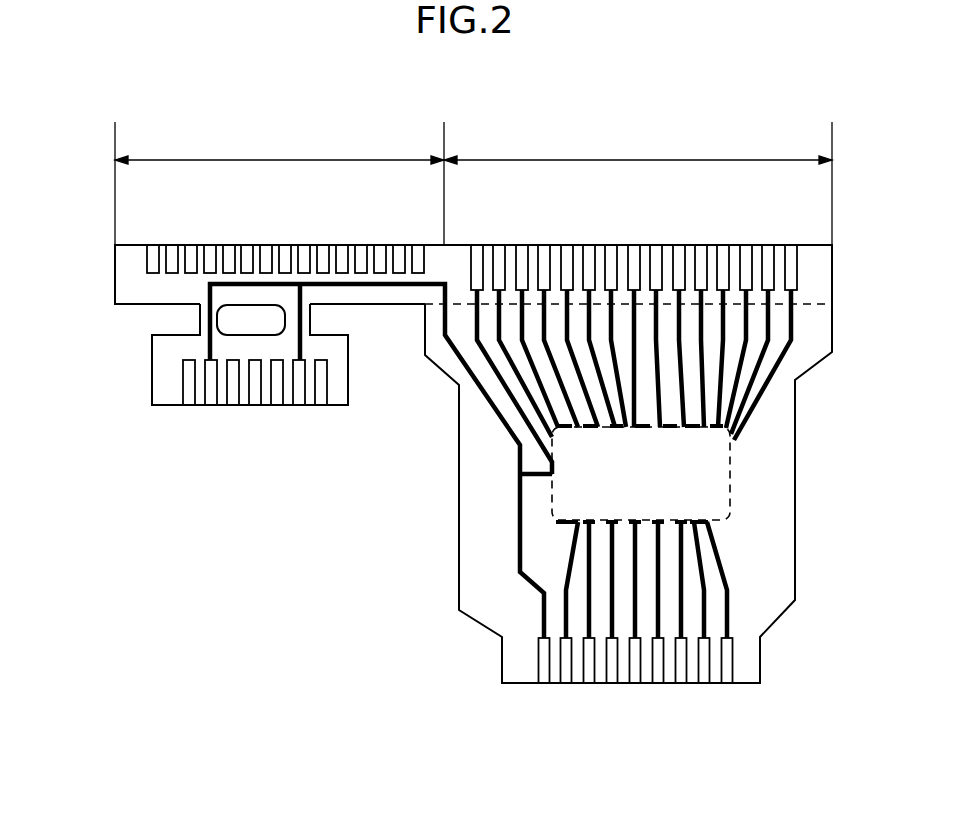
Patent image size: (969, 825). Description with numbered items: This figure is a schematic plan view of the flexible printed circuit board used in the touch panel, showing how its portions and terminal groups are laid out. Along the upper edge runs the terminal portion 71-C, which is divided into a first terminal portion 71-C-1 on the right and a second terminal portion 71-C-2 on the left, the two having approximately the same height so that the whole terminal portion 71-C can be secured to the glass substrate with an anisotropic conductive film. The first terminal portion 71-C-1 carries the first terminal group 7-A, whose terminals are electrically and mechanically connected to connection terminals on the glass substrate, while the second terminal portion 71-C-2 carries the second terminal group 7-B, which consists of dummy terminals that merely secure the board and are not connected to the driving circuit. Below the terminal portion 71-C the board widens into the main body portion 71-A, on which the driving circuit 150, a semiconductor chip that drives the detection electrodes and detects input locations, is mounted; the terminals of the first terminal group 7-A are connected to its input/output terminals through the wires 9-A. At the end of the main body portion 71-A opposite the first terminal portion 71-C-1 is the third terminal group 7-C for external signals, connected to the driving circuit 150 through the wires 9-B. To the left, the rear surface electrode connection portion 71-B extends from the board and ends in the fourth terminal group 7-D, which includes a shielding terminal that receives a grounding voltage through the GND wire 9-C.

The terminal portion 71-C is at (102, 246).
The first terminal portion 71-C-1 is at (638, 183).
The second terminal portion 71-C-2 is at (279, 183).
The main body portion 71-A is at (768, 465).
The rear surface electrode connection portion 71-B is at (170, 377).
The first terminal group 7-A is at (470, 237).
The second terminal group 7-B is at (145, 237).
The third terminal group 7-C is at (533, 696).
The fourth terminal group 7-D is at (178, 415).
The wires 9-A is at (778, 365).
The wires 9-B is at (728, 607).
The GND wire 9-C is at (493, 410).
The driving circuit 150 is at (583, 502).